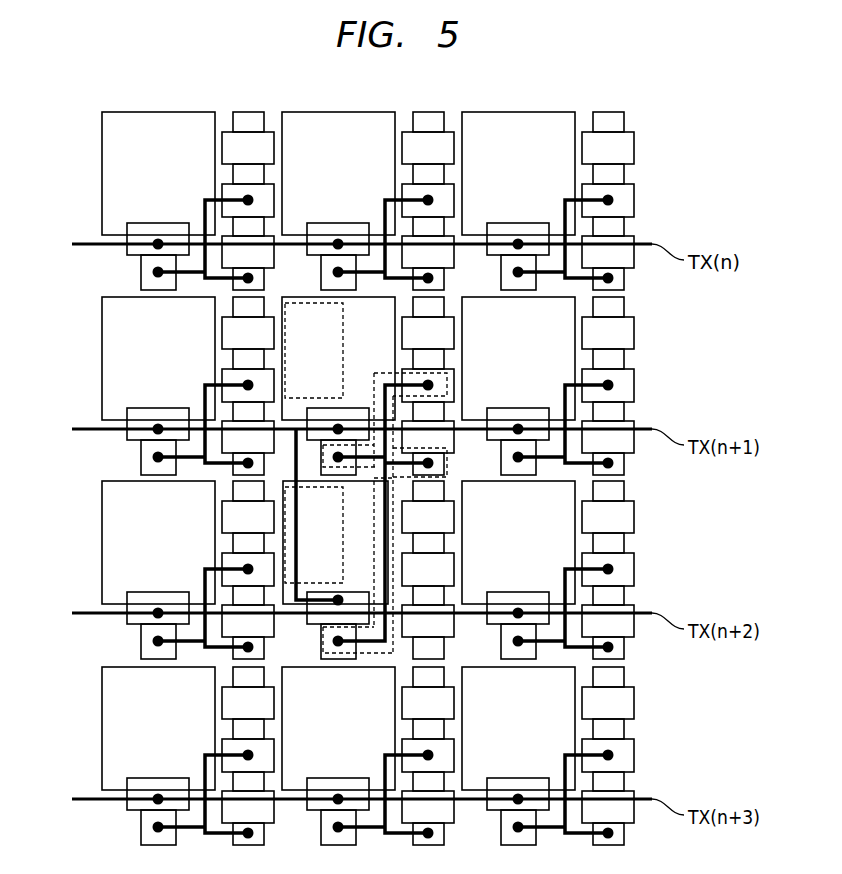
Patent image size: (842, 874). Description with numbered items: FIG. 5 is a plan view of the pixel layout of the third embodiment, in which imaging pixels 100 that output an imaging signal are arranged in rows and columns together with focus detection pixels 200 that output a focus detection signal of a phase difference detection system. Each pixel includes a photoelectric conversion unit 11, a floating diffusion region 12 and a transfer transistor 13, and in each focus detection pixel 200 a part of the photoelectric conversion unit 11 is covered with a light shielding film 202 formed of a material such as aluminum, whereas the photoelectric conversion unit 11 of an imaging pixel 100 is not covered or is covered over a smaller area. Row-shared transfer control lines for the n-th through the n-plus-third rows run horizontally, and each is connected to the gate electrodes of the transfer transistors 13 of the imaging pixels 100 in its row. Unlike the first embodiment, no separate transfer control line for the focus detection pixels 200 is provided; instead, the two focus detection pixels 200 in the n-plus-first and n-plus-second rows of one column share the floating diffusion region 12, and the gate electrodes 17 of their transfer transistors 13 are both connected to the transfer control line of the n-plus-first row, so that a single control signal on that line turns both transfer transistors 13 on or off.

The imaging pixel 100 is at (368, 478).
The focus detection pixel 200 is at (221, 450).
The light shielding film 202 is at (283, 306).
The photoelectric conversion unit 11 is at (312, 297).
The floating diffusion region 12 is at (449, 462).
The transfer transistor 13 is at (313, 412).
The gate electrode 17 is at (340, 425).